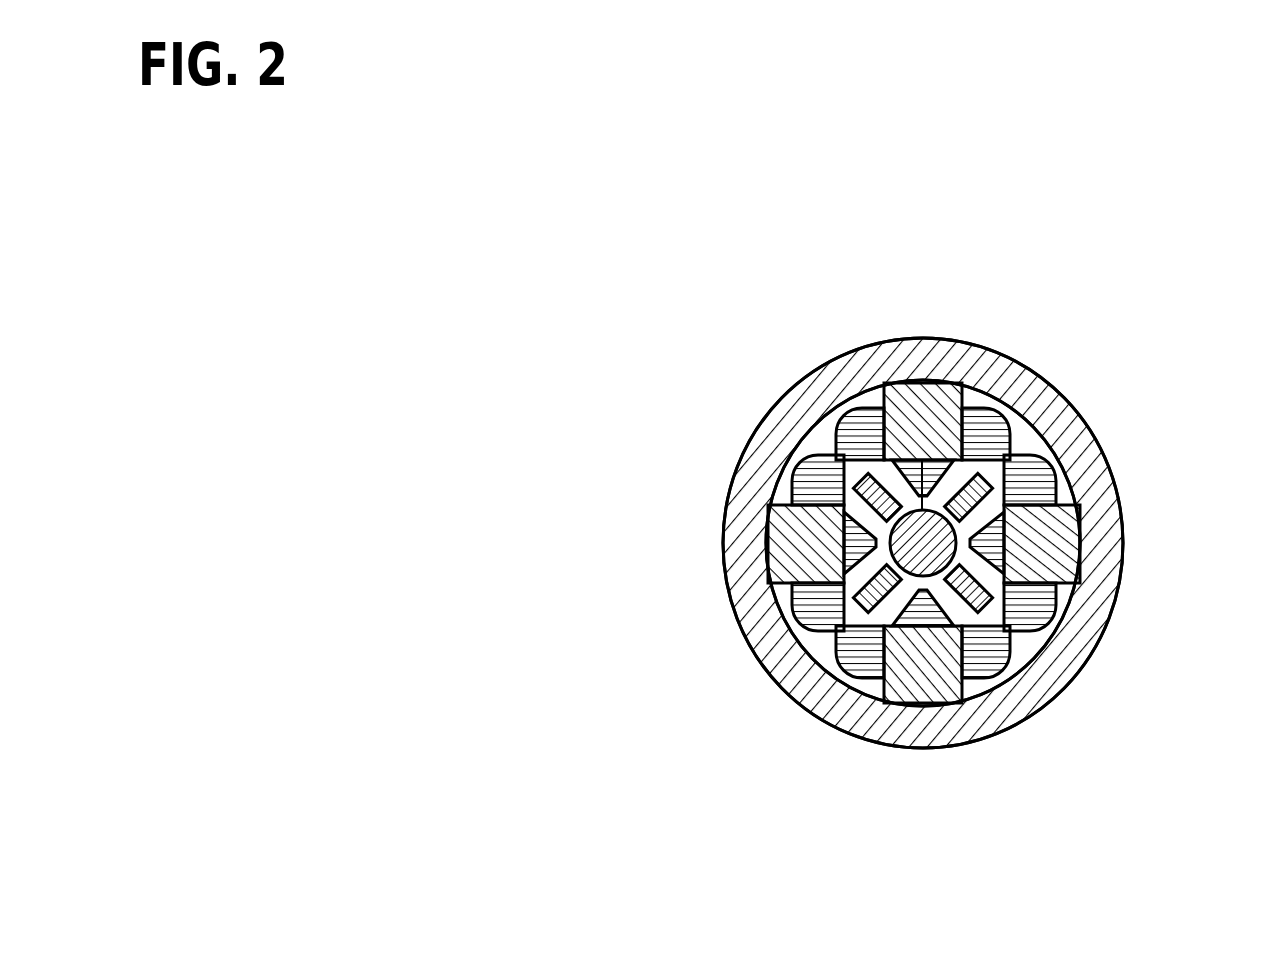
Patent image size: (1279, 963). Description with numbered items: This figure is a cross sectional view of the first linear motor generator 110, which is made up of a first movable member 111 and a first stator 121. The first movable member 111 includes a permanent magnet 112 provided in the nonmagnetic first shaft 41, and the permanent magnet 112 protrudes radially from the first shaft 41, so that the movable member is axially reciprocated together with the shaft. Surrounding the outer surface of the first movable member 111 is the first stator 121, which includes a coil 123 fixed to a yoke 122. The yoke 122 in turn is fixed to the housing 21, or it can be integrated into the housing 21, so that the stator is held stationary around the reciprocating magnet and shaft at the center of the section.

The first linear motor generator 110 is at (1040, 316).
The first movable member 111 is at (925, 592).
The permanent magnet 112 is at (998, 468).
The first stator 121 is at (791, 636).
The yoke 122 is at (930, 398).
The coil 123 is at (860, 403).
The housing 21 is at (1100, 647).
The first shaft 41 is at (891, 381).